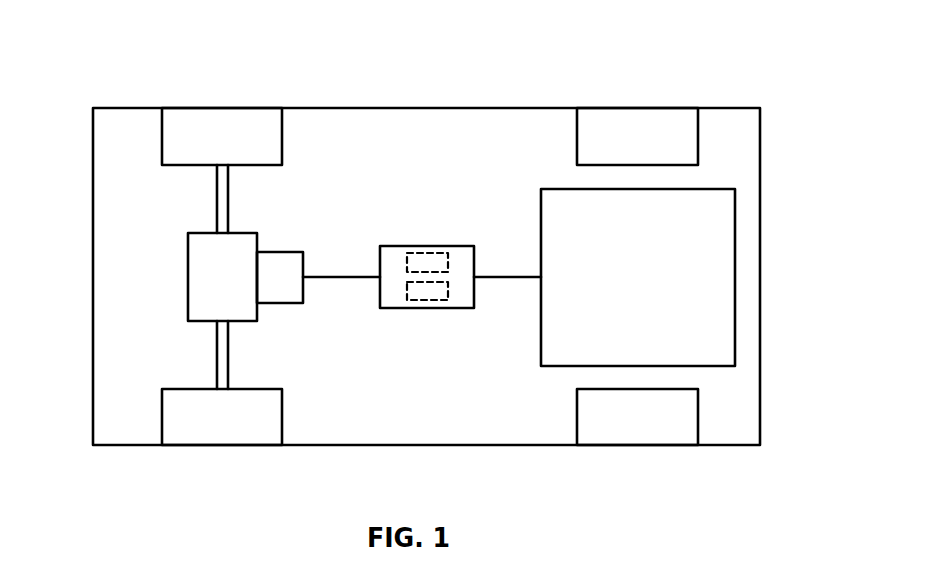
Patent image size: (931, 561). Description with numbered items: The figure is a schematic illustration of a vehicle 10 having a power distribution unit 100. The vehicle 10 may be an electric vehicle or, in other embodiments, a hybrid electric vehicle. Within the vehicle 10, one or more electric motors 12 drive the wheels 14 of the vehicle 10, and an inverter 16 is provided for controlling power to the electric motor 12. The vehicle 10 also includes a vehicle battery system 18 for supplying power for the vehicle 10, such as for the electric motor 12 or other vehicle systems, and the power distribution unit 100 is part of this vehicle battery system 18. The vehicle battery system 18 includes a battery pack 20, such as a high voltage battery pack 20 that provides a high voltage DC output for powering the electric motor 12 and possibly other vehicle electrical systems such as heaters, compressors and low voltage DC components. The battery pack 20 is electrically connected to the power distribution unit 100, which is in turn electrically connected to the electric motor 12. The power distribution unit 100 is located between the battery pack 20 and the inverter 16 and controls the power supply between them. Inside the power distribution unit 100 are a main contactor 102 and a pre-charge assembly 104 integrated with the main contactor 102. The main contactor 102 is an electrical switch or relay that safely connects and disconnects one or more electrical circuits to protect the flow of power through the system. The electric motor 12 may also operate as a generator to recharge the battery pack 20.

The vehicle 10 is at (358, 46).
The electric motor 12 is at (188, 247).
The wheels 14 is at (200, 108).
The inverter 16 is at (298, 303).
The vehicle battery system 18 is at (490, 188).
The battery pack 20 is at (735, 230).
The power distribution unit 100 is at (402, 247).
The main contactor 102 is at (433, 253).
The pre-charge assembly 104 is at (433, 300).